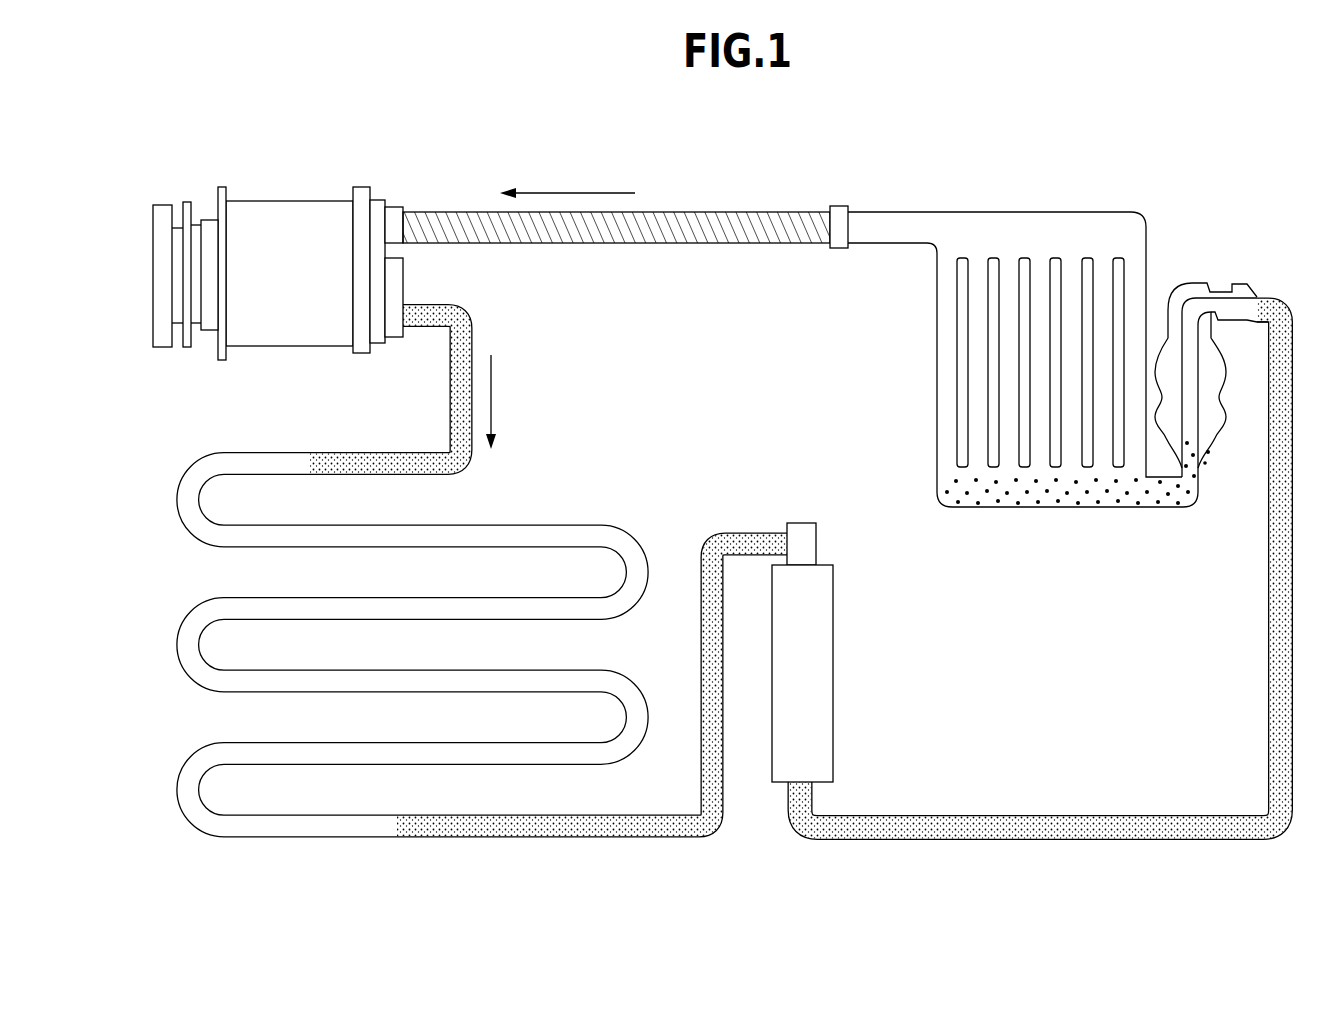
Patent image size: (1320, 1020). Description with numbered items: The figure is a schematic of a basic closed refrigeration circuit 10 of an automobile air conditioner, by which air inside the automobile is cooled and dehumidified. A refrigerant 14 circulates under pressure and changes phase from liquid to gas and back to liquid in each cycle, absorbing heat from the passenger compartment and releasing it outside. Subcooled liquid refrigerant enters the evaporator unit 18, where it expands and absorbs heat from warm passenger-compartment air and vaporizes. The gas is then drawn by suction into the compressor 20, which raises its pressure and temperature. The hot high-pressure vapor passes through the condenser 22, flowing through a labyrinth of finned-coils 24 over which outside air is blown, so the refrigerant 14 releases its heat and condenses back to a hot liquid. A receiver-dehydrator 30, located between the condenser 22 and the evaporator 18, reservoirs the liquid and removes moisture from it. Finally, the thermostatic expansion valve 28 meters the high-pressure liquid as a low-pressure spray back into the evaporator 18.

The closed refrigeration circuit 10 is at (1164, 856).
The refrigerant 14 is at (682, 211).
The evaporator unit 18 is at (940, 410).
The compressor 20 is at (277, 201).
The condenser 22 is at (372, 851).
The finned-coils 24 is at (582, 526).
The thermostatic expansion valve 28 is at (1208, 289).
The receiver-dehydrator 30 is at (823, 637).